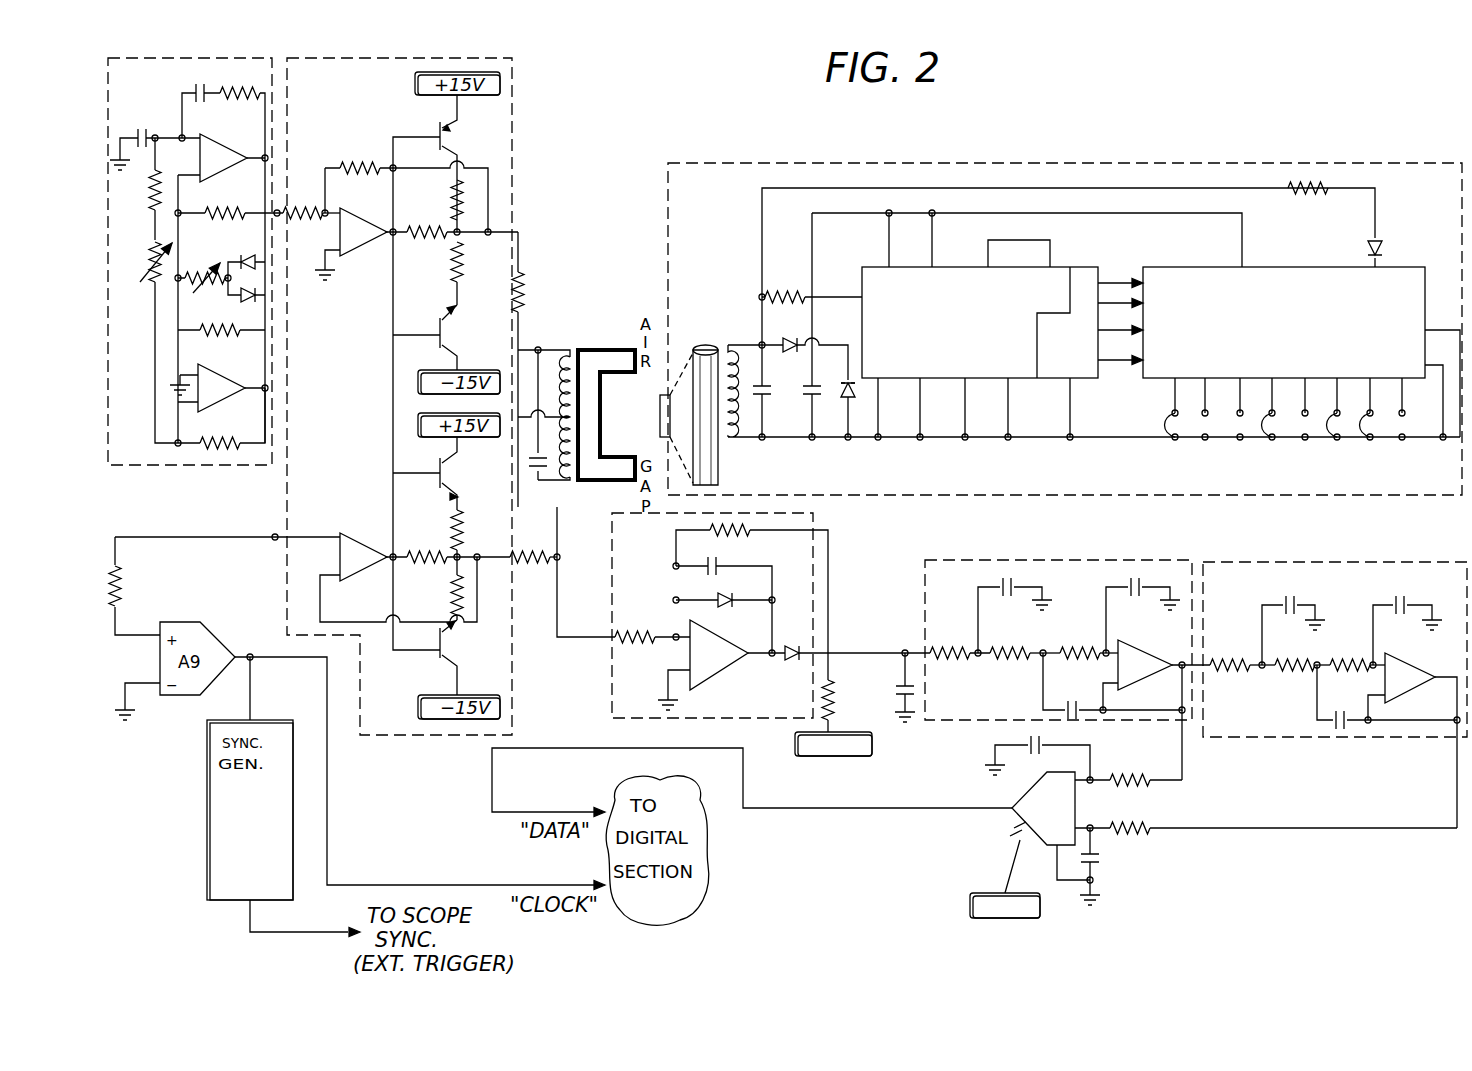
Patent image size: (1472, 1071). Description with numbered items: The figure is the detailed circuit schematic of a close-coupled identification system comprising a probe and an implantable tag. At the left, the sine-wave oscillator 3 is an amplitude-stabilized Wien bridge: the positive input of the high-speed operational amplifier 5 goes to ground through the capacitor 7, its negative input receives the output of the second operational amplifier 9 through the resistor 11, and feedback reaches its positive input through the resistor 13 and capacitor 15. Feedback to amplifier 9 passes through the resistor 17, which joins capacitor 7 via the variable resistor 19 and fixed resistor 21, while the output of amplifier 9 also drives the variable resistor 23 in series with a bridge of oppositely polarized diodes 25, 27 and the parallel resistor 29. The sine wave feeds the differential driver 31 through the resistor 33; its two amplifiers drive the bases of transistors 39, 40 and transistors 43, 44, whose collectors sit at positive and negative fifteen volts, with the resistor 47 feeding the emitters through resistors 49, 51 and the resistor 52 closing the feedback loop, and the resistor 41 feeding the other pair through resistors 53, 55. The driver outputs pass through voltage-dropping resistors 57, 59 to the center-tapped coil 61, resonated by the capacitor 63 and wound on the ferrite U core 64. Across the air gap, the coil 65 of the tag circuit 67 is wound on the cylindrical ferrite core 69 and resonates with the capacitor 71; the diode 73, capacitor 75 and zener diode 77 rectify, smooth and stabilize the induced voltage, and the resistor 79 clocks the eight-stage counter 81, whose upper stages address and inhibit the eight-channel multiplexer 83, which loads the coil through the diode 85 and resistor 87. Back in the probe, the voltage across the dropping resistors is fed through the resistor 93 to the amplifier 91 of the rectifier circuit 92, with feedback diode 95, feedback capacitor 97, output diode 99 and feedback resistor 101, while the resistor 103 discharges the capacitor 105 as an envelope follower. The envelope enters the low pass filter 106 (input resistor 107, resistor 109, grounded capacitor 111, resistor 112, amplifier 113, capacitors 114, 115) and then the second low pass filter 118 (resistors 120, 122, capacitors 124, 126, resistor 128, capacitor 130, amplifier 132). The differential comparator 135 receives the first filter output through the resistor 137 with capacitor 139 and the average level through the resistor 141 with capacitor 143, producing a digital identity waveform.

The sine-wave oscillator 3 is at (127, 470).
The high-speed operational amplifier 5 is at (239, 161).
The capacitor 7 is at (138, 132).
The second high-speed operational amplifier 9 is at (196, 364).
The resistor 11 is at (236, 332).
The resistor 13 is at (240, 100).
The capacitor 15 is at (200, 88).
The resistor 17 is at (220, 442).
The variable resistor 19 is at (150, 276).
The fixed resistor 21 is at (150, 210).
The variable resistor 23 is at (198, 274).
The diode 25 is at (248, 255).
The diode 27 is at (246, 300).
The parallel resistor 29 is at (230, 199).
The differential driver 31 is at (346, 735).
The resistor 33 is at (311, 198).
The transistor 39 is at (438, 130).
The transistor 40 is at (438, 337).
The resistor 41 is at (451, 573).
The transistor 43 is at (438, 472).
The transistor 44 is at (438, 650).
The resistor 47 is at (433, 238).
The resistor 49 is at (446, 210).
The resistor 51 is at (454, 274).
The resistor 52 is at (352, 165).
The resistor 53 is at (456, 526).
The resistor 55 is at (456, 604).
The voltage dropping resistor 57 is at (523, 286).
The voltage-dropping resistor 59 is at (533, 574).
The coil 61 is at (574, 488).
The capacitor 63 is at (536, 468).
The ferrite U core 64 is at (606, 348).
The coil 65 is at (723, 440).
The tag circuit 67 is at (1460, 168).
The cylindrical ferrite core 69 is at (658, 408).
The capacitor 71 is at (769, 394).
The diode 73 is at (805, 342).
The capacitor 75 is at (821, 394).
The zener diode 77 is at (858, 410).
The resistor 79 is at (782, 294).
The eight-stage CMOS counter 81 is at (1066, 380).
The eight-channel multiplexer circuit 83 is at (1402, 282).
The diode 85 is at (1380, 244).
The resistor 87 is at (1298, 191).
The amplifier 91 is at (714, 676).
The rectifier circuit 92 is at (770, 722).
The resistor 93 is at (652, 653).
The feedback diode 95 is at (728, 608).
The feedback capacitor 97 is at (723, 560).
The output diode 99 is at (800, 662).
The feedback resistor 101 is at (714, 528).
The resistor 103 is at (832, 690).
The capacitor 105 is at (900, 690).
The low pass filter 106 is at (1118, 559).
The input resistor 107 is at (955, 636).
The resistor 109 is at (1027, 636).
The grounded capacitor 111 is at (1000, 582).
The resistor 112 is at (1090, 636).
The amplifier 113 is at (1140, 654).
The capacitor 114 is at (1062, 714).
The capacitor 115 is at (1143, 615).
The second low pass filter 118 is at (1240, 739).
The resistor 120 is at (1232, 668).
The resistor 122 is at (1293, 680).
The capacitor 124 is at (1284, 599).
The capacitor 126 is at (1334, 722).
The resistor 128 is at (1356, 637).
The capacitor 130 is at (1396, 598).
The amplifier 132 is at (1412, 670).
The differential comparator 135 is at (1010, 805).
The resistor 137 is at (1145, 775).
The capacitor 139 is at (1028, 741).
The resistor 141 is at (1131, 832).
The capacitor 143 is at (1100, 860).